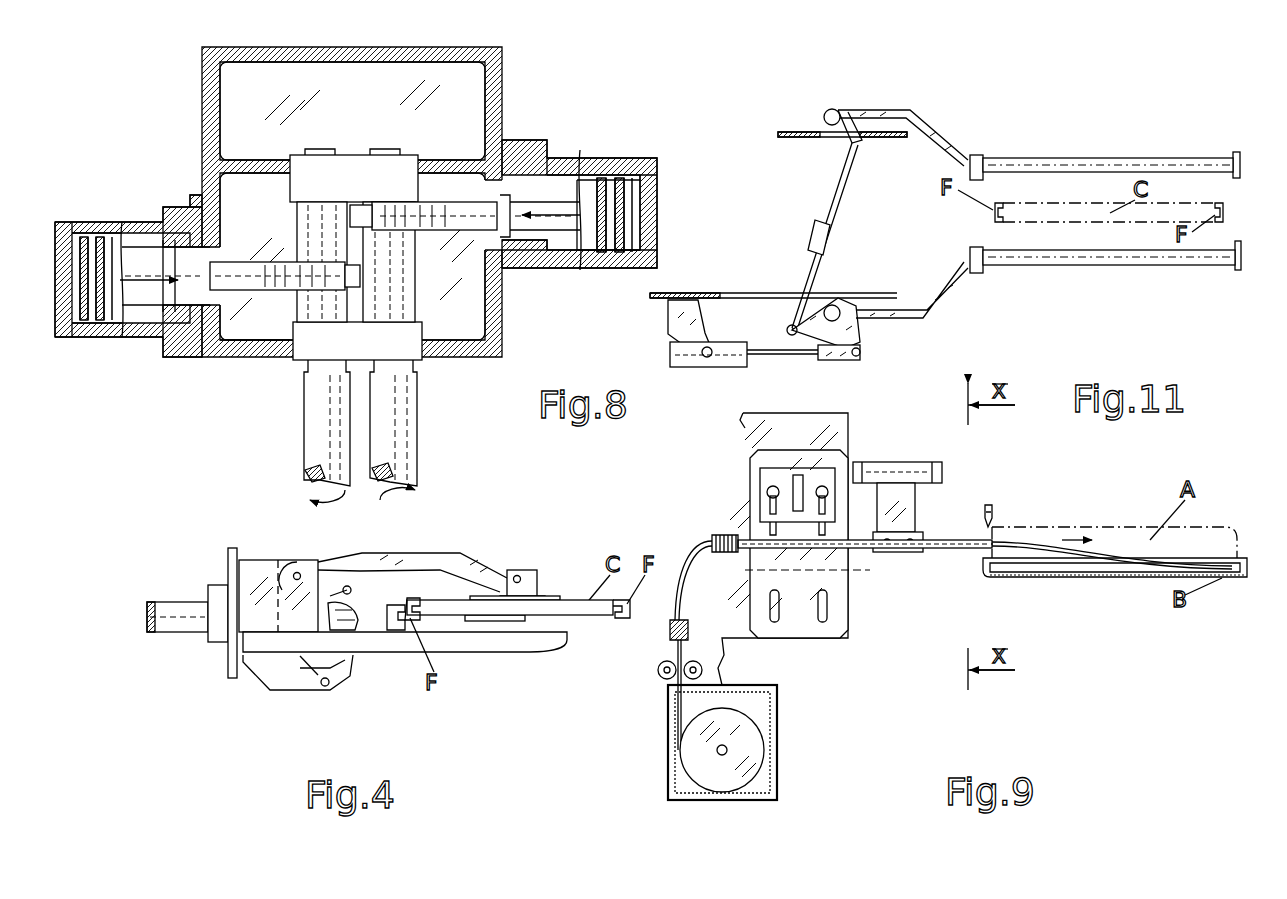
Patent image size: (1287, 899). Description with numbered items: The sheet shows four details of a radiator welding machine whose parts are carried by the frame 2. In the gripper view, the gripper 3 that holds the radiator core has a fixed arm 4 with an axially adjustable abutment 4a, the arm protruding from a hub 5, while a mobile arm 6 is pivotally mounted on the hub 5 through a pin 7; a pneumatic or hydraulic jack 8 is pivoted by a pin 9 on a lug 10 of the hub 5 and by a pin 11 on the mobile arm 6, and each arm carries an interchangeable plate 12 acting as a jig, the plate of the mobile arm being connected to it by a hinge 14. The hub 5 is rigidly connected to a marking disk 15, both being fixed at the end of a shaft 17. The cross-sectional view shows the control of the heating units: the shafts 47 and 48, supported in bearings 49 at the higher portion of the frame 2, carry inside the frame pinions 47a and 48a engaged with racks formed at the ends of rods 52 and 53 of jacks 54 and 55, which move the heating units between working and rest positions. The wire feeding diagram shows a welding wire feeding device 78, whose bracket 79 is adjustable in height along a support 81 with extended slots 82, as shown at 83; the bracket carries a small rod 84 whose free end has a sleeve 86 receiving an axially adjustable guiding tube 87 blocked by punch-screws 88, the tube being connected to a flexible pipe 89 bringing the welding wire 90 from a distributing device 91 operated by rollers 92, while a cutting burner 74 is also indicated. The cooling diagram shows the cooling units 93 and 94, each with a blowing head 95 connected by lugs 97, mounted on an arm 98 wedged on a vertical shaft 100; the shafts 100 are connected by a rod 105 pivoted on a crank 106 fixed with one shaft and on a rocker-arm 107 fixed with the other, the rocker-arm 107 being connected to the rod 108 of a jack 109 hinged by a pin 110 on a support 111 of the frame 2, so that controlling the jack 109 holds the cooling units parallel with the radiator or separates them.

In FIG. 8, the frame 2 is at (506, 56).
In FIG. 9, the frame 2 is at (738, 635).
In FIG. 11, the frame 2 is at (718, 293).
In FIG. 4, the gripper 3 is at (395, 690).
In FIG. 4, the fixed arm 4 is at (440, 650).
In FIG. 4, the axially adjustable abutment 4a is at (398, 622).
In FIG. 4, the hub 5 is at (250, 576).
In FIG. 4, the mobile arm 6 is at (425, 562).
In FIG. 4, the pin 7 is at (297, 574).
In FIG. 4, the pneumatic or hydraulic jack 8 is at (322, 664).
In FIG. 4, the pin 9 is at (324, 688).
In FIG. 4, the lug 10 is at (268, 680).
In FIG. 4, the pin 11 is at (350, 602).
In FIG. 4, the plate 12 is at (555, 597).
In FIG. 4, the hinge 14 is at (517, 574).
In FIG. 4, the marking disk 15 is at (230, 584).
In FIG. 4, the shaft 17 is at (185, 626).
In FIG. 8, the shaft 47 is at (315, 430).
In FIG. 8, the pinion 47a is at (340, 268).
In FIG. 8, the shaft 48 is at (470, 462).
In FIG. 8, the pinion 48a is at (360, 198).
In FIG. 8, the bearing 49 is at (405, 170).
In FIG. 8, the rod 52 is at (240, 348).
In FIG. 8, the rod 53 is at (472, 232).
In FIG. 8, the jack 54 is at (118, 222).
In FIG. 8, the jack 55 is at (568, 170).
In FIG. 9, the cutting burner 74 is at (993, 512).
In FIG. 9, the welding wire feeding device 78 is at (822, 664).
In FIG. 9, the bracket 79 is at (820, 480).
In FIG. 9, the support 81 is at (752, 470).
In FIG. 9, the extended slot 82 is at (826, 612).
In FIG. 9, the slot 83 is at (770, 506).
In FIG. 9, the small rod 84 is at (914, 508).
In FIG. 9, the sleeve 86 is at (915, 550).
In FIG. 9, the guiding tube 87 is at (960, 550).
In FIG. 9, the punch-screw 88 is at (886, 550).
In FIG. 9, the flexible pipe 89 is at (722, 538).
In FIG. 9, the welding wire 90 is at (1040, 544).
In FIG. 9, the distributing device 91 is at (668, 732).
In FIG. 9, the rollers 92 is at (658, 672).
In FIG. 11, the cooling unit 93 is at (1008, 270).
In FIG. 11, the cooling unit 94 is at (1148, 128).
In FIG. 11, the blowing head 95 is at (1108, 262).
In FIG. 11, the lug 97 is at (986, 158).
In FIG. 11, the arm 98 is at (950, 157).
In FIG. 11, the shaft 100 is at (836, 108).
In FIG. 11, the rod 105 is at (830, 190).
In FIG. 11, the crank 106 is at (872, 128).
In FIG. 11, the rocker-arm 107 is at (822, 306).
In FIG. 11, the rod 108 is at (787, 356).
In FIG. 11, the jack 109 is at (738, 368).
In FIG. 11, the pin 110 is at (705, 356).
In FIG. 11, the support 111 is at (682, 322).